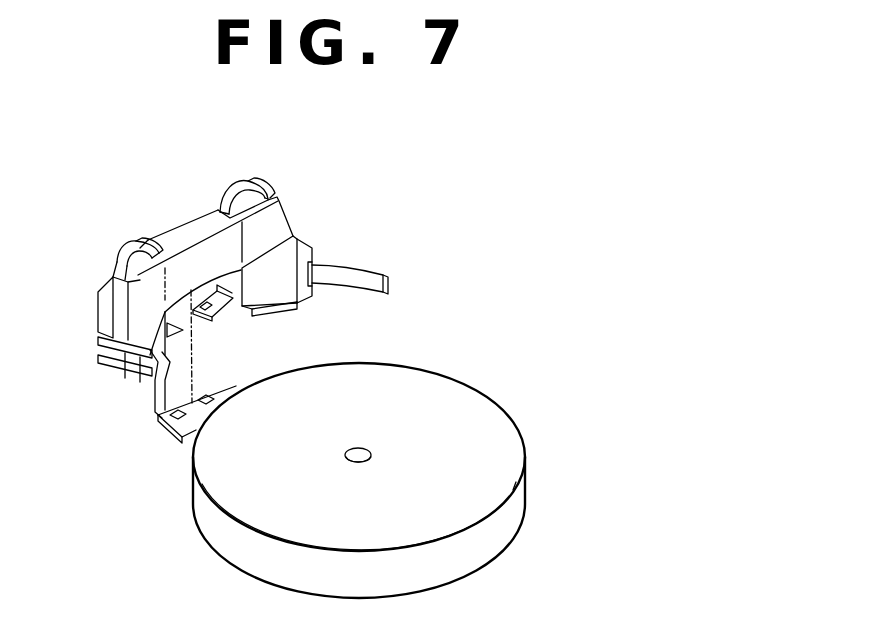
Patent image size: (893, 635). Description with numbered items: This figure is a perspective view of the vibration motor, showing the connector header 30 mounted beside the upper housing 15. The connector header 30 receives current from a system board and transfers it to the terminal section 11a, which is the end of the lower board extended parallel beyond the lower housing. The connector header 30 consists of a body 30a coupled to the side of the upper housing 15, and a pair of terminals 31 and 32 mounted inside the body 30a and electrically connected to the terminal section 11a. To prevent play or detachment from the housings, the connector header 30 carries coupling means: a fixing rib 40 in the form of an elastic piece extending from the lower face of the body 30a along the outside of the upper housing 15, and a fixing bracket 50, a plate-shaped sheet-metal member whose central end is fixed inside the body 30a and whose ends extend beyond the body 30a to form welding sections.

The upper housing 15 is at (536, 469).
The terminal section 11a is at (182, 437).
The connector header 30 is at (317, 214).
The body 30a is at (190, 228).
The terminal 31 is at (243, 182).
The terminal 32 is at (133, 240).
The fixing bracket 50 is at (360, 263).
The fixing rib 40 is at (308, 314).